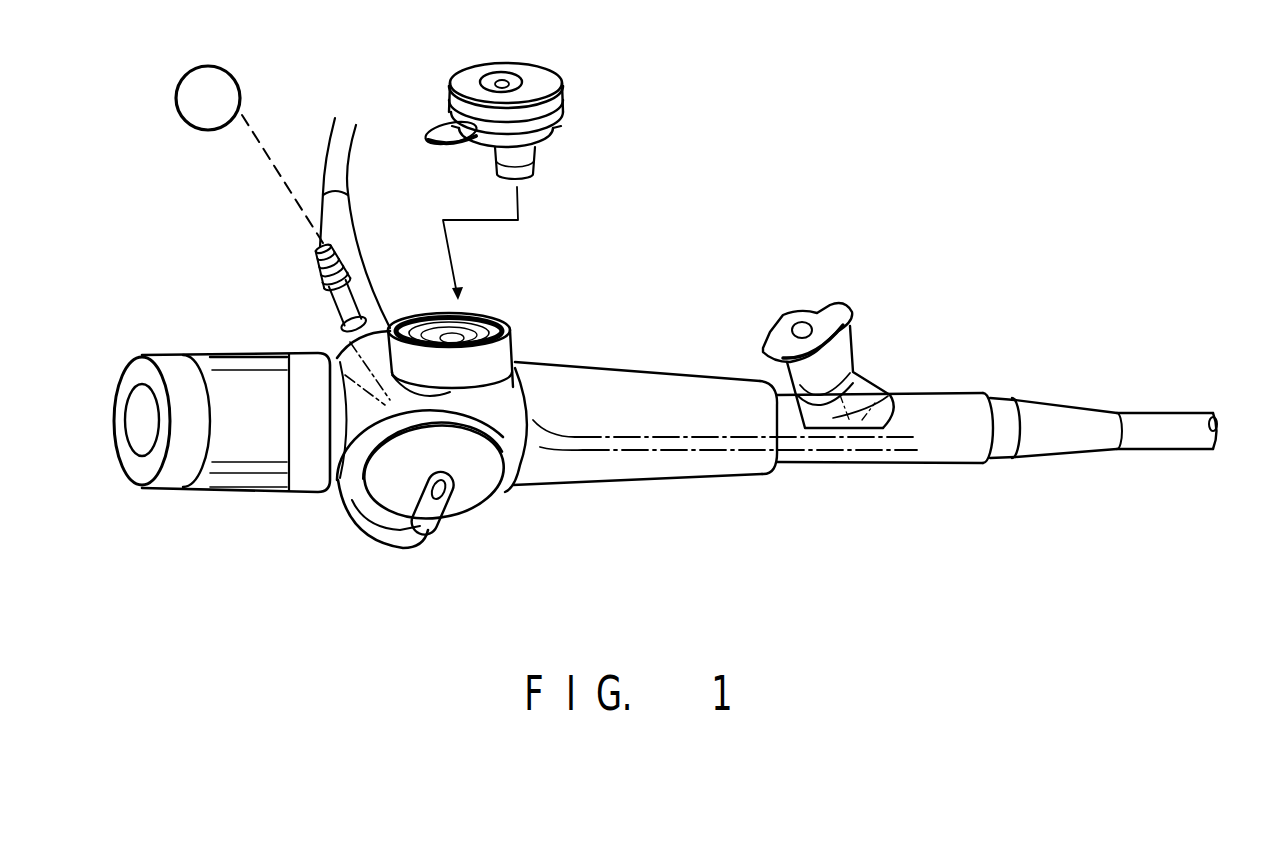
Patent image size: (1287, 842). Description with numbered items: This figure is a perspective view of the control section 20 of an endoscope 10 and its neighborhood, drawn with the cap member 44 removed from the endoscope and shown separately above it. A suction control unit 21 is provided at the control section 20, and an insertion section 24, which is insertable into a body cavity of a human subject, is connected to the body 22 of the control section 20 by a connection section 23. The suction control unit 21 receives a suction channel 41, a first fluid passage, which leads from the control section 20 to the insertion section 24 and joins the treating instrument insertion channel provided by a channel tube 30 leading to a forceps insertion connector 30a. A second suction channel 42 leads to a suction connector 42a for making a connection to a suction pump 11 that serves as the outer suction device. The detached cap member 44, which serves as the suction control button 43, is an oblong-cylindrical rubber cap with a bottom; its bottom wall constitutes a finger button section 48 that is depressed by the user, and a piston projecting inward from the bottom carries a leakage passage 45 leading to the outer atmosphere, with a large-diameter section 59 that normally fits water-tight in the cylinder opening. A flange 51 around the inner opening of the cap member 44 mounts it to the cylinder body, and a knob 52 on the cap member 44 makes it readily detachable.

The endoscope 10 is at (724, 516).
The suction pump 11 is at (238, 75).
The control section 20 is at (563, 493).
The suction control unit 21 is at (494, 310).
The body 22 is at (508, 475).
The connection section 23 is at (1002, 390).
The insertion section 24 is at (1178, 417).
The channel tube 30 is at (878, 372).
The forceps insertion connector 30a is at (787, 373).
The suction channel (first fluid passage) 41 is at (664, 445).
The suction channel (second fluid passage) 42 is at (350, 430).
The suction connector 42a is at (318, 268).
The suction control button 43 is at (574, 90).
The cap member 44 is at (450, 98).
The leakage passage 45 is at (503, 79).
The finger button section 48 is at (510, 76).
The flange 51 is at (567, 127).
The knob 52 is at (443, 123).
The large-diameter section 59 is at (535, 157).